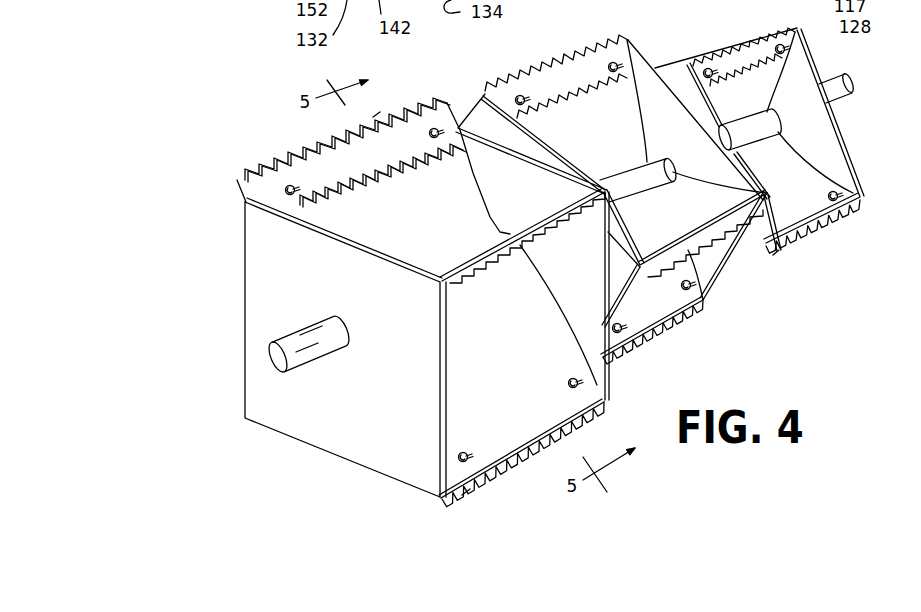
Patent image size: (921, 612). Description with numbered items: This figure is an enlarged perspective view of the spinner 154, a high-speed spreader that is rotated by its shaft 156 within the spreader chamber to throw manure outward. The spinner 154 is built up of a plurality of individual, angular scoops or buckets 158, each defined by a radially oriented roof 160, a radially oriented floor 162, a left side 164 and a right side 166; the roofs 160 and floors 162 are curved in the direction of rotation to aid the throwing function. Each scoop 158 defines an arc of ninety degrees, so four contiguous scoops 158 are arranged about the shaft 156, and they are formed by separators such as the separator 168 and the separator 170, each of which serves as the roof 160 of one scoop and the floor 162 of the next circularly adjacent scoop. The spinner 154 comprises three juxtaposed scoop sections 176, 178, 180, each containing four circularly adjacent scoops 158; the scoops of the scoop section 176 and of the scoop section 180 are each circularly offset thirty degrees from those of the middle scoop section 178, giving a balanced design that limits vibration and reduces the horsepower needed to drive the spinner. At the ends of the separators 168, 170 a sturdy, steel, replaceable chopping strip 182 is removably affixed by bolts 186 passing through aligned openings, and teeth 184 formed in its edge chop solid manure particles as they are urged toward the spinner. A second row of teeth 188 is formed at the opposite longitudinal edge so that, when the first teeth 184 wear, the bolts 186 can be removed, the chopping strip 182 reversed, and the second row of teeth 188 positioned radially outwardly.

The spinner 154 is at (298, 449).
The shaft 156 is at (289, 338).
The scoop 158 is at (242, 326).
The roof 160 is at (360, 228).
The floor 162 is at (467, 383).
The left side 164 is at (353, 428).
The right side 166 is at (497, 178).
The separator 168 is at (436, 246).
The separator 170 is at (490, 370).
The scoop section 176 is at (506, 474).
The scoop section 178 is at (670, 332).
The scoop section 180 is at (816, 236).
The chopping strip 182 is at (373, 116).
The teeth 184 is at (552, 62).
The bolts 186 is at (288, 186).
The second row of teeth 188 is at (384, 181).